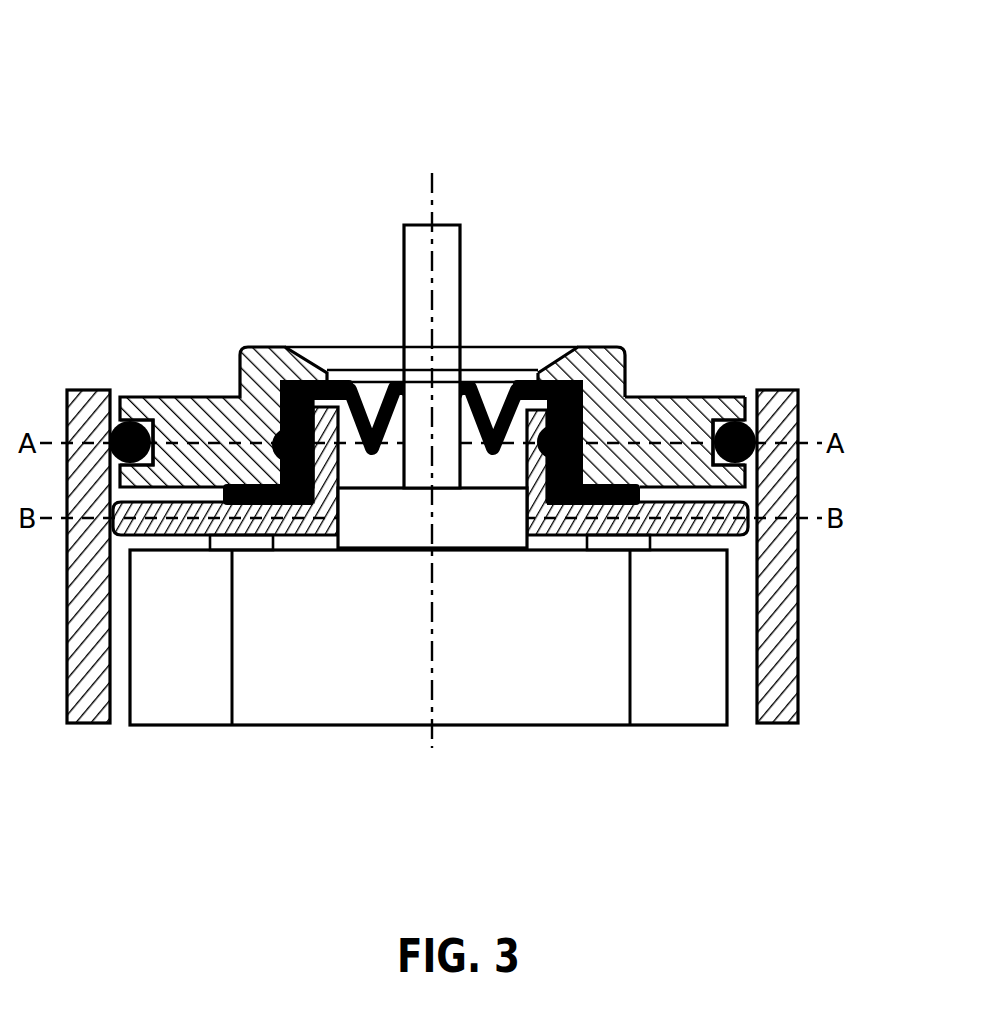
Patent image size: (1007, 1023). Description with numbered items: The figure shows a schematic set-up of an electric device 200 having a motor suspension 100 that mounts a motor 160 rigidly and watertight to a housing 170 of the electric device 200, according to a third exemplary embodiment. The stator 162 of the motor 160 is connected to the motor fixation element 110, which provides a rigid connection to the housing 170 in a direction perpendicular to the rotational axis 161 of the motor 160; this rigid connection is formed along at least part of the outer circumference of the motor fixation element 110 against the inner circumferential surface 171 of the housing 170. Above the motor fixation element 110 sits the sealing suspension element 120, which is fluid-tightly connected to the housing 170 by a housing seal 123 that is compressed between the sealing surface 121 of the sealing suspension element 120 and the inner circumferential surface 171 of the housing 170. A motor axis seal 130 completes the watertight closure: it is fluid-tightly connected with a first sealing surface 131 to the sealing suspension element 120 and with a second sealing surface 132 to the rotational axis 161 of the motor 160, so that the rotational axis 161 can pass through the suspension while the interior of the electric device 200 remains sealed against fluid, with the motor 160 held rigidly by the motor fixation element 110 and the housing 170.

The electric device 200 is at (235, 95).
The motor suspension 100 is at (223, 215).
The motor fixation element 110 is at (183, 530).
The sealing suspension element 120 is at (268, 363).
The sealing surface 121 is at (157, 463).
The housing seal 123 is at (140, 418).
The motor axis seal 130 is at (580, 447).
The first sealing surface 131 is at (618, 347).
The second sealing surface 132 is at (470, 388).
The motor 160 is at (180, 792).
The rotational axis 161 is at (453, 225).
The stator 162 is at (563, 725).
The housing 170 is at (78, 723).
The inner circumferential surface 171 is at (760, 463).